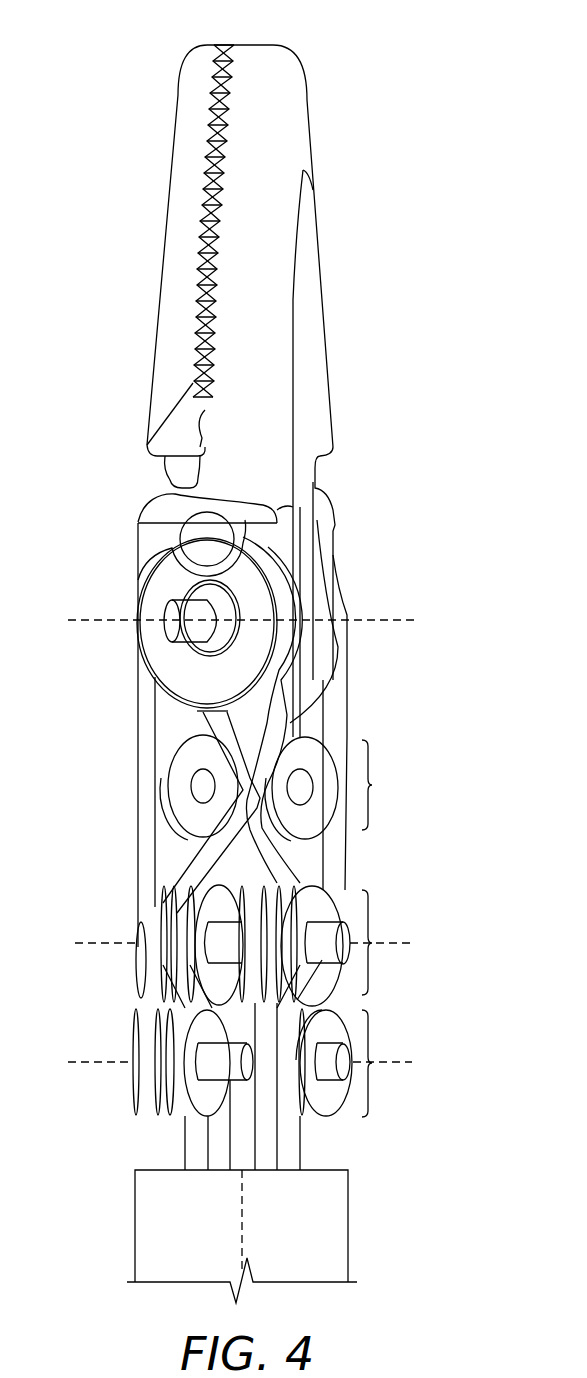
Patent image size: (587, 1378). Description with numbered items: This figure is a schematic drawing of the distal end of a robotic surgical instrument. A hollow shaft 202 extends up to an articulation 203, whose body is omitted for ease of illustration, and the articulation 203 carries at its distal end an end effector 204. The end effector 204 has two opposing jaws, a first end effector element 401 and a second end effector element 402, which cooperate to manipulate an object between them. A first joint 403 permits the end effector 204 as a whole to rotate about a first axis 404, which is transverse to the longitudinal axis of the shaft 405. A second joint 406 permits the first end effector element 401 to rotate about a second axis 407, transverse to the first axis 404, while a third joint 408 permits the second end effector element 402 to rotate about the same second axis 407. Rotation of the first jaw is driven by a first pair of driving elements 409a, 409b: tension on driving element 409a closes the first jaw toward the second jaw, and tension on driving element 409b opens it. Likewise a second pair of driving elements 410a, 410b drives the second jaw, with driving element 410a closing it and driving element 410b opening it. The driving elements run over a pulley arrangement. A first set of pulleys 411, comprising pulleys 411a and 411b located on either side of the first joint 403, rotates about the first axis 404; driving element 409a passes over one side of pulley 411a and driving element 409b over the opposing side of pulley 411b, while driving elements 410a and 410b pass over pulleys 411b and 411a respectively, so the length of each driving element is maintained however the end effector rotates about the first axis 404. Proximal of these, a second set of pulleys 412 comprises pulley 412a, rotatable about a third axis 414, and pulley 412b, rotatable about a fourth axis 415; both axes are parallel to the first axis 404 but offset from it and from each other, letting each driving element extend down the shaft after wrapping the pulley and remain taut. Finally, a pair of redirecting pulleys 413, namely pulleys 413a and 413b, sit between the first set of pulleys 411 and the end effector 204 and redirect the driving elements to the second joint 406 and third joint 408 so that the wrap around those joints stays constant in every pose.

The shaft 202 is at (142, 1188).
The articulation 203 is at (413, 645).
The end effector 204 is at (316, 40).
The first end effector element 401 is at (297, 124).
The second end effector element 402 is at (175, 160).
The first joint 403 is at (188, 953).
The first axis 404 is at (67, 940).
The longitudinal axis of the shaft 405 is at (243, 1188).
The second joint 406 is at (172, 607).
The second axis 407 is at (88, 622).
The third joint 408 is at (358, 600).
The first driving element of the first pair 409a is at (148, 835).
The second driving element of the first pair 409b is at (290, 712).
The first driving element of the second pair 410a is at (340, 688).
The second driving element of the second pair 410b is at (208, 720).
The first set of pulleys 411 is at (385, 942).
The first pulley of the first set 411a is at (188, 917).
The second pulley of the first set 411b is at (320, 902).
The second set of pulleys 412 is at (391, 1063).
The first pulley of the second set 412a is at (187, 1050).
The second pulley of the second set 412b is at (330, 1100).
The pair of redirecting pulleys 413 is at (392, 785).
The first redirecting pulley 413a is at (178, 780).
The second redirecting pulley 413b is at (330, 745).
The third axis 414 is at (83, 1065).
The fourth axis 415 is at (400, 1065).